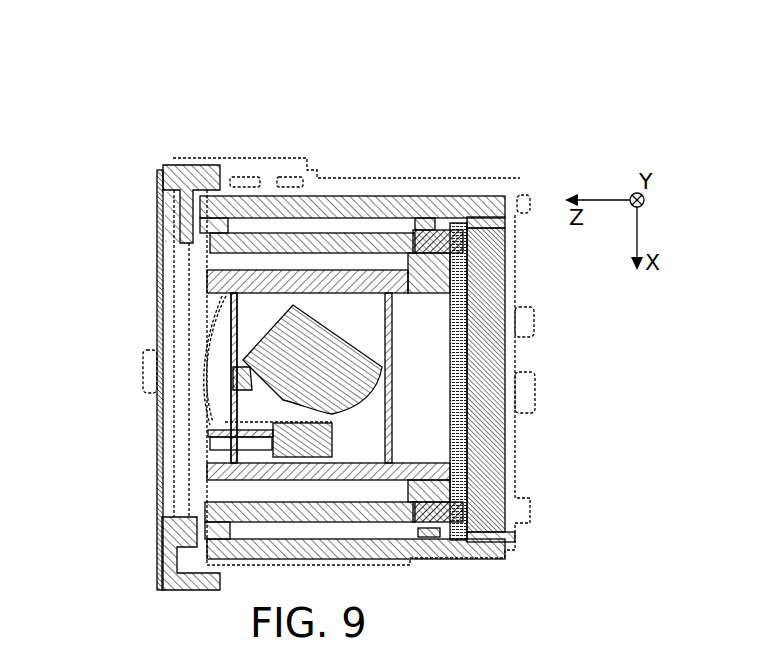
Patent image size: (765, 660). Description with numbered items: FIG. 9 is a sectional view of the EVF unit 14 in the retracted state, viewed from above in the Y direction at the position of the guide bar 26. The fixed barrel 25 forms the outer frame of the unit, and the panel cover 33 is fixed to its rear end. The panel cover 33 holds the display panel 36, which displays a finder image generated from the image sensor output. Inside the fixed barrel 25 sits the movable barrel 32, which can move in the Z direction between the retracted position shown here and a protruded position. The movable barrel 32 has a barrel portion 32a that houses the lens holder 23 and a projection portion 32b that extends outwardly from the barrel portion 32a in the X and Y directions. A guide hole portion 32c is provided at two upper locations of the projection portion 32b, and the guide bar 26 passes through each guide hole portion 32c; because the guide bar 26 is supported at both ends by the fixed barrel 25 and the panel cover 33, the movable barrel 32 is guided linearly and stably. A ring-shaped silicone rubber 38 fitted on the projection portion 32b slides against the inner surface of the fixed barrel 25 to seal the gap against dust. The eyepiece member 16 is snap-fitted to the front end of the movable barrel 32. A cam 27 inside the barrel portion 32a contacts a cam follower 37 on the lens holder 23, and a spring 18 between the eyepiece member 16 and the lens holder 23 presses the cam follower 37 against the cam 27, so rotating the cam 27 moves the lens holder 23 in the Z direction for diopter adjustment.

The EVF unit 14 is at (572, 79).
The eyepiece member 16 is at (173, 176).
The spring 18 is at (240, 452).
The lens holder 23 is at (295, 457).
The fixed barrel 25 is at (265, 207).
The guide bar 26 is at (318, 245).
The cam 27 is at (285, 381).
The movable barrel 32 is at (330, 280).
The barrel portion 32a is at (227, 284).
The projection portion 32b is at (435, 265).
The guide hole portion 32c is at (412, 232).
The panel cover 33 is at (455, 226).
The display panel 36 is at (475, 280).
The cam follower 37 is at (240, 383).
The silicone rubber 38 is at (423, 222).